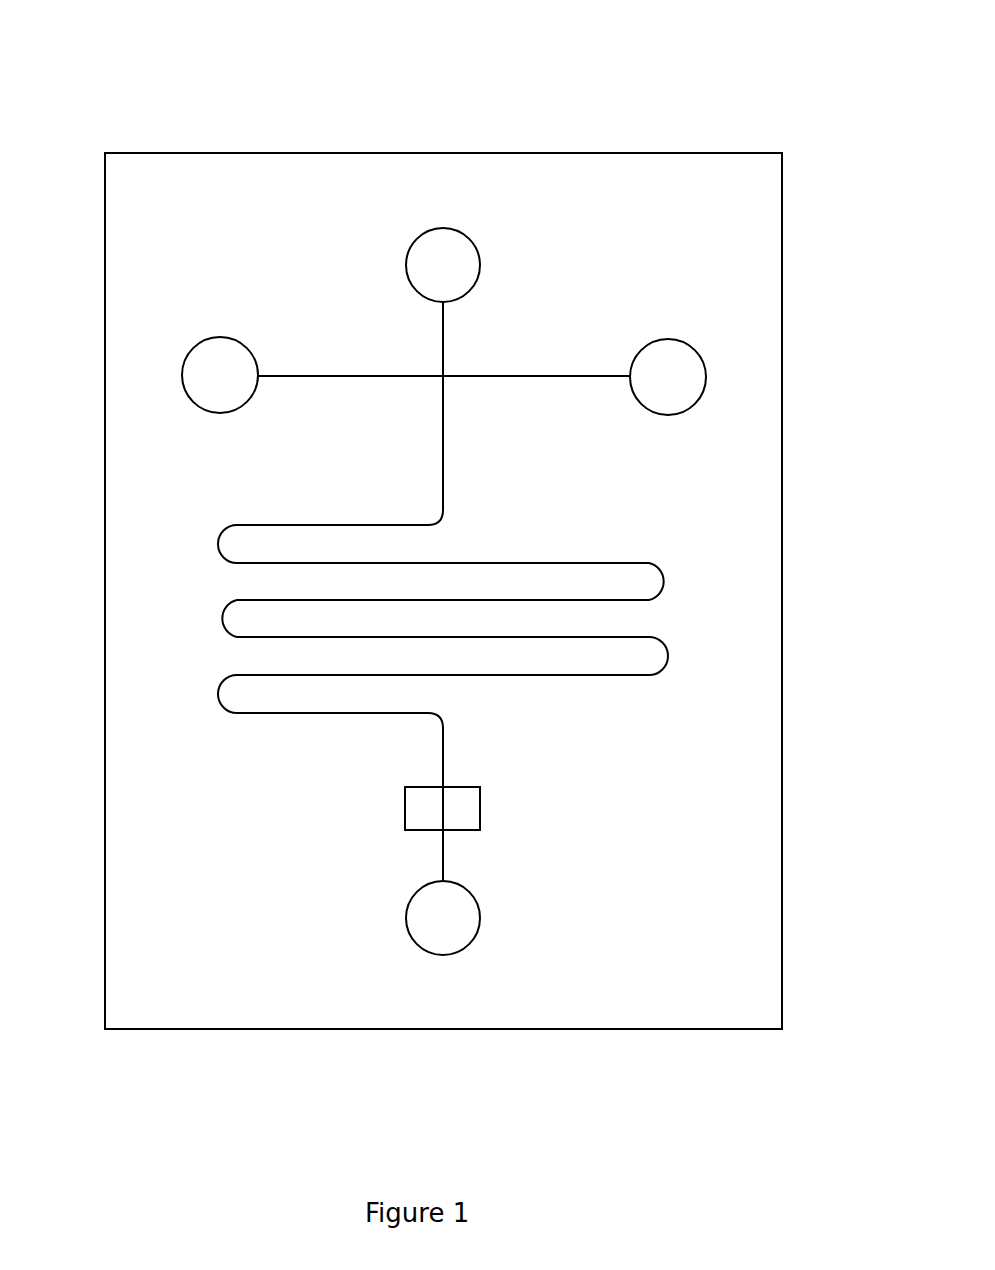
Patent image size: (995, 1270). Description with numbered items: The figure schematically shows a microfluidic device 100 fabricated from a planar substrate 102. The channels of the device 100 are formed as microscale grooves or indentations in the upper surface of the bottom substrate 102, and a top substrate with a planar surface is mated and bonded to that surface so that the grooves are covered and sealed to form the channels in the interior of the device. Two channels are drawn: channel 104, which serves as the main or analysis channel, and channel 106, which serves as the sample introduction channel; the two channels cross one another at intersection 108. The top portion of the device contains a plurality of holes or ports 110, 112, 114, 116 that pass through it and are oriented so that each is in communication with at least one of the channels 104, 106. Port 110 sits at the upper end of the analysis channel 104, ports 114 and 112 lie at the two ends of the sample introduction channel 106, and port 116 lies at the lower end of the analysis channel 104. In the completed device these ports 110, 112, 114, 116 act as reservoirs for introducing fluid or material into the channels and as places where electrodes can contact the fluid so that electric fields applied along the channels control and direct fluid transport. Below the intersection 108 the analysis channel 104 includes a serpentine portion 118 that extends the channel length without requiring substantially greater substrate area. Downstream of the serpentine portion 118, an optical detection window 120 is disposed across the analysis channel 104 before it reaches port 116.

The microfluidic device 100 is at (57, 92).
The planar substrate 102 is at (708, 172).
The analysis channel 104 is at (445, 433).
The sample introduction channel 106 is at (538, 375).
The intersection 108 is at (445, 375).
The port 110 is at (445, 265).
The port 112 is at (692, 353).
The port 114 is at (218, 375).
The port 116 is at (445, 920).
The serpentine portion 118 is at (668, 750).
The optical detection window 120 is at (482, 807).